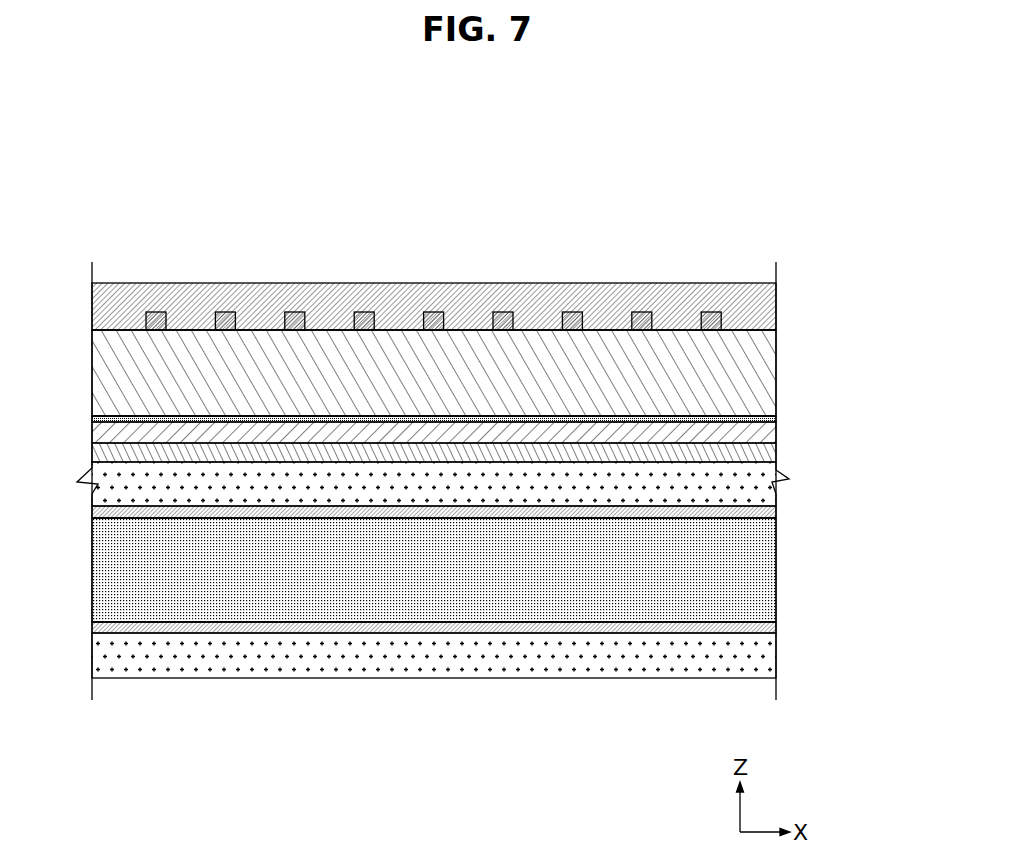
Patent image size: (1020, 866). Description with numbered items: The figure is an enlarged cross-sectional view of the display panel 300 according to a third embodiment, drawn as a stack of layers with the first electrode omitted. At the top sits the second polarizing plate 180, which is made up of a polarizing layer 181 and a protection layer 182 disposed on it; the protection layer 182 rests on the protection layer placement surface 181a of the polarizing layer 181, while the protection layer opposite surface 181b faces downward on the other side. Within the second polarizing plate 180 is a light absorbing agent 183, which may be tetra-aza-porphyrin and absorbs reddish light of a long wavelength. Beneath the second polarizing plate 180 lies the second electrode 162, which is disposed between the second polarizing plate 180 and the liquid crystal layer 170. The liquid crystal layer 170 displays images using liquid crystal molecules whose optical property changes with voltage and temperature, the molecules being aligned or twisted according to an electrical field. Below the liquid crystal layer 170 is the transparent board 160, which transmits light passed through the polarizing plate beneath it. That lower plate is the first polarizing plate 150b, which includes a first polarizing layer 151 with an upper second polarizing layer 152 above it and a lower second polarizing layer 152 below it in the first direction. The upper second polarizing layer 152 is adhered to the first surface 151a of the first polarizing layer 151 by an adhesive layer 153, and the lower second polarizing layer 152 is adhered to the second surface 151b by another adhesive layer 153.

The display panel 300 is at (730, 197).
The second polarizing plate 180 is at (855, 290).
The protection layer 182 is at (768, 300).
The light absorbing agent 183 is at (723, 312).
The polarizing layer 181 is at (765, 366).
The protection layer placement surface 181a is at (479, 337).
The protection layer opposite surface 181b is at (143, 413).
The second electrode 162 is at (770, 420).
The liquid crystal layer 170 is at (765, 432).
The board 160 is at (765, 458).
The first polarizing plate 150b is at (855, 665).
The second polarizing layer 152 is at (767, 497).
The adhesive layer 153 is at (777, 513).
The first polarizing layer 151 is at (767, 576).
The first surface 151a is at (130, 518).
The second surface 151b is at (133, 622).